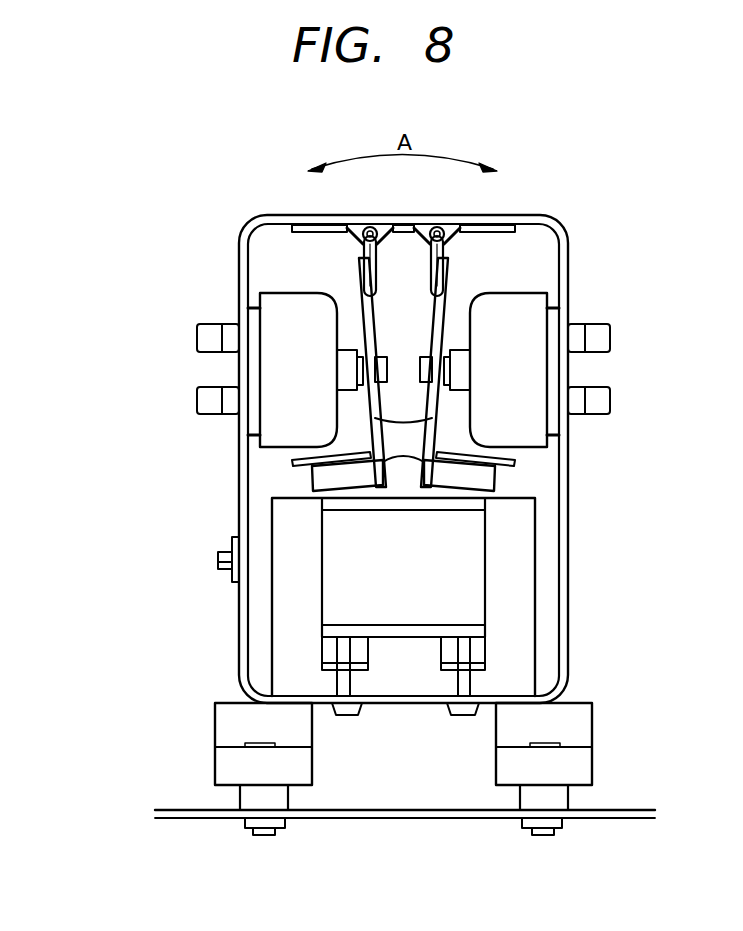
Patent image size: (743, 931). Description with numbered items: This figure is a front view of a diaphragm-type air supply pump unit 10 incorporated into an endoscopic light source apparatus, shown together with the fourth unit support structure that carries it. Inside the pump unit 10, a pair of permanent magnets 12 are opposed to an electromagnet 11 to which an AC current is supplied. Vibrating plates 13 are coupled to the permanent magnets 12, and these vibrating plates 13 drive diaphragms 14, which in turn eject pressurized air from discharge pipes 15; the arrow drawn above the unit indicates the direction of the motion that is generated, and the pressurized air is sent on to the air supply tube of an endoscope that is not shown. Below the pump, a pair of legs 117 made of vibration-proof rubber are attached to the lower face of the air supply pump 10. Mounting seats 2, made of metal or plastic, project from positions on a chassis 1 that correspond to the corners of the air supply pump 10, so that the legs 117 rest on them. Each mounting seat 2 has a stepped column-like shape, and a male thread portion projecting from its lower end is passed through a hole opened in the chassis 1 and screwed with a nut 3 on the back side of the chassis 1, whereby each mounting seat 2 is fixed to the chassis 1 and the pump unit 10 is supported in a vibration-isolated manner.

The chassis 1 is at (387, 820).
The mounting seat 2 is at (290, 800).
The nut 3 is at (282, 830).
The air supply pump unit 10 is at (583, 244).
The electromagnet 11 is at (480, 577).
The permanent magnet 12 is at (318, 482).
The vibrating plate 13 is at (368, 320).
The diaphragm 14 is at (282, 383).
The discharge pipe 15 is at (207, 334).
The leg 117 is at (227, 758).